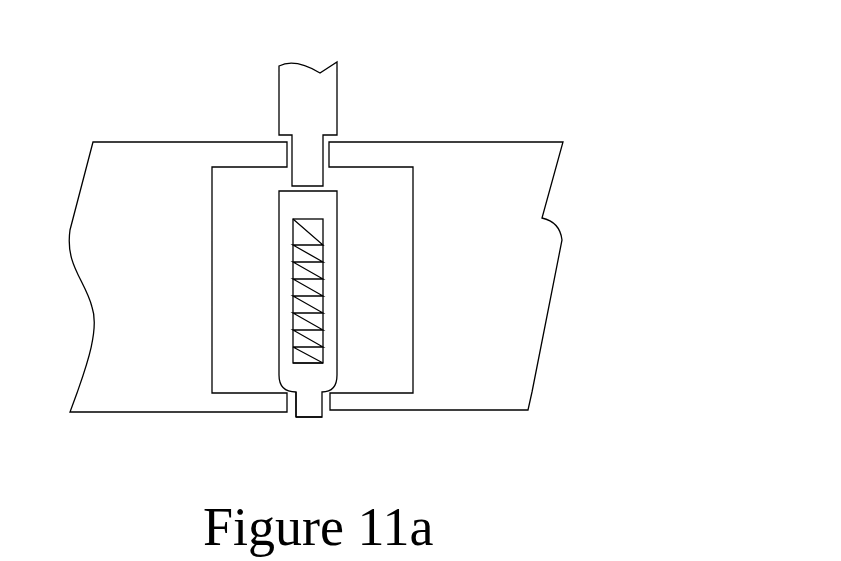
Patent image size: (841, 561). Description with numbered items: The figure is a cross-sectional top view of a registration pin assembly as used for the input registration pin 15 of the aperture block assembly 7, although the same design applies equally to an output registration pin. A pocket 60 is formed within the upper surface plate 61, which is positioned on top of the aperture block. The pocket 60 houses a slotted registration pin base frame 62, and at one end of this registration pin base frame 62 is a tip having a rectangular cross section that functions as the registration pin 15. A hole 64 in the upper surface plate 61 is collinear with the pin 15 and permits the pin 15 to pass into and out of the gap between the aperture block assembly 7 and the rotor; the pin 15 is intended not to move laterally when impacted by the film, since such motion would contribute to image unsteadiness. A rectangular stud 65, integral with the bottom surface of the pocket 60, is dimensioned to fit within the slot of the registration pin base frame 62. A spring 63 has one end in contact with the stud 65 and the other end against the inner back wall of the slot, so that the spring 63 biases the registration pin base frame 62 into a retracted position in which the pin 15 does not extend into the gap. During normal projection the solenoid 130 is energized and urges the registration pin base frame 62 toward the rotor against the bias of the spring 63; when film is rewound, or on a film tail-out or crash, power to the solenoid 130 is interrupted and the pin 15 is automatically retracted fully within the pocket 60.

The aperture block assembly 7 is at (488, 137).
The input registration pin 15 is at (312, 417).
The pocket 60 is at (250, 190).
The upper surface plate 61 is at (532, 208).
The registration pin base frame 62 is at (333, 325).
The spring 63 is at (313, 245).
The hole 64 is at (292, 413).
The rectangular stud 65 is at (300, 358).
The solenoid 130 is at (325, 108).